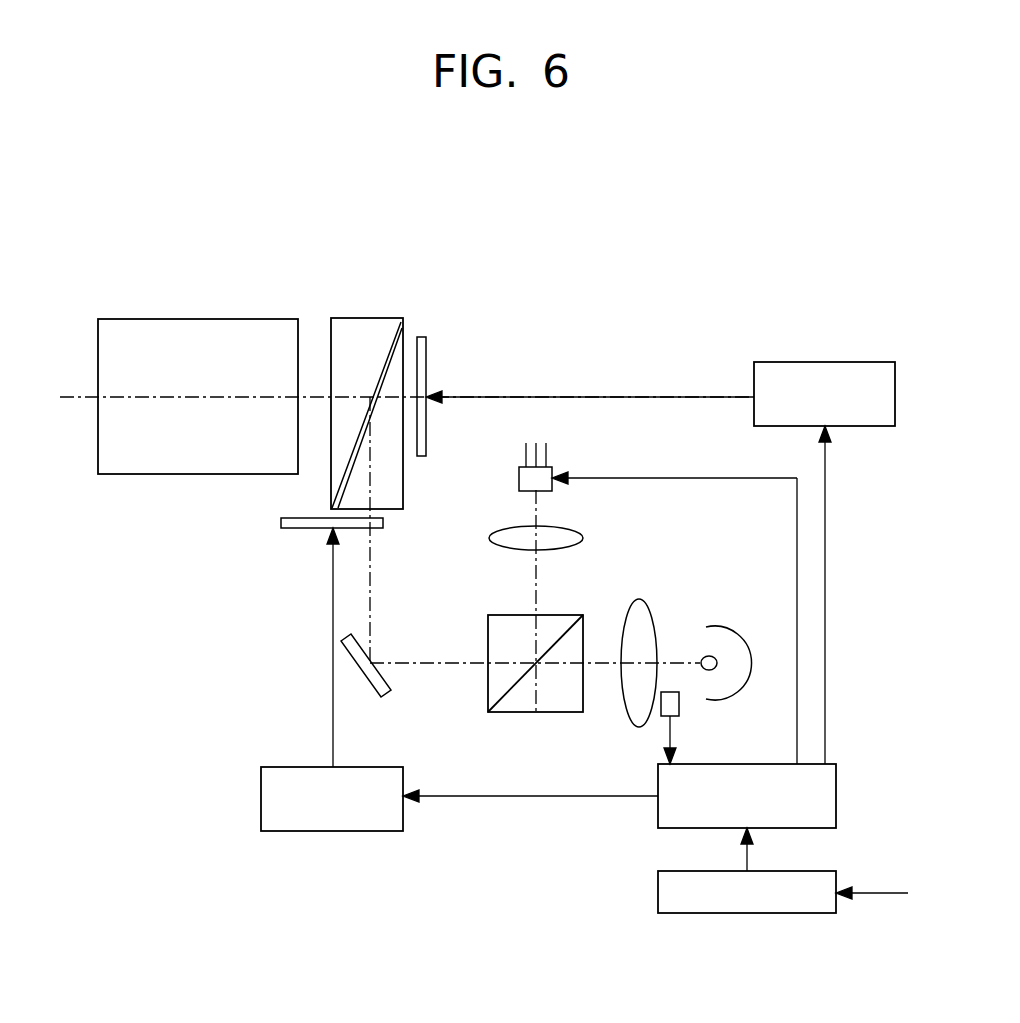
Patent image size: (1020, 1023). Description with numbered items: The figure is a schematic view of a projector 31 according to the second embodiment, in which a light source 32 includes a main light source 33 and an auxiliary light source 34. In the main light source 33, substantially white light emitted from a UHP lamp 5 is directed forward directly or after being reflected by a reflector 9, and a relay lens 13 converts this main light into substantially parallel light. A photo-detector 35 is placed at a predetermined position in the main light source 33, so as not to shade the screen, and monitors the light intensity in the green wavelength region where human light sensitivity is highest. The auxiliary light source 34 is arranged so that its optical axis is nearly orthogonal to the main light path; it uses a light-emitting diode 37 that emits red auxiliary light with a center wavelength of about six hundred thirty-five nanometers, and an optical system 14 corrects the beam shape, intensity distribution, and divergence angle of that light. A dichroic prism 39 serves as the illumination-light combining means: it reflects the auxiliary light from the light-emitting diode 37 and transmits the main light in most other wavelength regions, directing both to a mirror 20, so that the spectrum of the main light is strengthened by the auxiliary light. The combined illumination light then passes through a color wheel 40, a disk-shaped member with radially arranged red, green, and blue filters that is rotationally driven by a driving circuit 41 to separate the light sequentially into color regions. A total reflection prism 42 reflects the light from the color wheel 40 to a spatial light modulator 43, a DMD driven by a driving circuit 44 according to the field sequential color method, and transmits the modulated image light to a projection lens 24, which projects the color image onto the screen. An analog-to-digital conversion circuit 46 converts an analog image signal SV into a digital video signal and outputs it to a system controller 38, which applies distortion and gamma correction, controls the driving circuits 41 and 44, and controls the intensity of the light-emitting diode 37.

The projector 31 is at (289, 222).
The projection lens 24 is at (229, 319).
The total reflection prism 42 is at (352, 318).
The spatial light modulator 43 is at (426, 357).
The color wheel 40 is at (281, 522).
The light-emitting diode 37 is at (519, 480).
The optical system 14 is at (498, 535).
The auxiliary light source 34 is at (482, 566).
The mirror 20 is at (387, 696).
The dichroic prism 39 is at (549, 712).
The relay lens 13 is at (625, 613).
The UHP lamp 5 is at (702, 657).
The reflector 9 is at (742, 634).
The photo-detector 35 is at (679, 705).
The light source 32 is at (630, 551).
The main light source 33 is at (668, 598).
The system controller 38 is at (836, 791).
The driving circuit 41 is at (261, 796).
The driving circuit 44 is at (858, 362).
The analog-to-digital conversion circuit 46 is at (785, 913).
The analog image signal SV is at (887, 893).